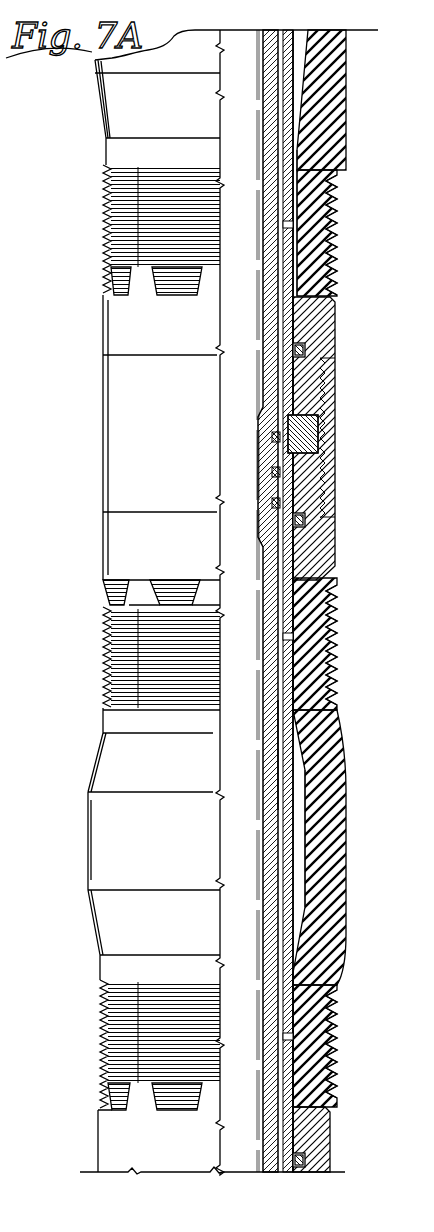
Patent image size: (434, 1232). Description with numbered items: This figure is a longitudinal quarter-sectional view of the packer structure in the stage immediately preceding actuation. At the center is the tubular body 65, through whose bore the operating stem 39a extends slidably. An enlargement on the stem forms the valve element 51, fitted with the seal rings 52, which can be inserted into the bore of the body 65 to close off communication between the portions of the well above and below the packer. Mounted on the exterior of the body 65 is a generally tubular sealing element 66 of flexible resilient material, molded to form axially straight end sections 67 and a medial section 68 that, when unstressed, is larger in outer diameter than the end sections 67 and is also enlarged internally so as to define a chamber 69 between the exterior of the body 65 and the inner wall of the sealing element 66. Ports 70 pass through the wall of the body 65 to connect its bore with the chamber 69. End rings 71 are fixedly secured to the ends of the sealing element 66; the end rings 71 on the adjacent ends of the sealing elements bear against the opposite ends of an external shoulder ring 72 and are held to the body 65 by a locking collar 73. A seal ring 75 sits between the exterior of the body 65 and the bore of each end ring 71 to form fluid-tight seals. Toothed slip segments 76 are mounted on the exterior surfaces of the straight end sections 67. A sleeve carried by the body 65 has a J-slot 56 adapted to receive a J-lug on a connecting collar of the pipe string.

The operating stem 39a is at (268, 88).
The valve element 51 is at (268, 485).
The seal rings 52 is at (275, 470).
The J-slot 56 is at (276, 755).
The tubular body 65 is at (296, 120).
The sealing element 66 is at (101, 114).
The end section 67 is at (318, 240).
The medial section 68 is at (340, 52).
The chamber 69 is at (302, 77).
The ports 70 is at (282, 226).
The end ring 71 is at (333, 322).
The external shoulder ring 72 is at (310, 432).
The locking collar 73 is at (333, 392).
The seal ring 75 is at (303, 350).
The toothed slip segments 76 is at (108, 230).